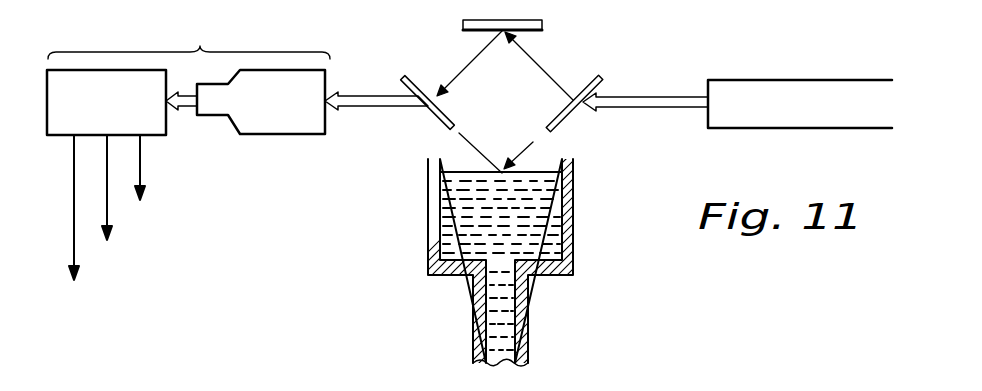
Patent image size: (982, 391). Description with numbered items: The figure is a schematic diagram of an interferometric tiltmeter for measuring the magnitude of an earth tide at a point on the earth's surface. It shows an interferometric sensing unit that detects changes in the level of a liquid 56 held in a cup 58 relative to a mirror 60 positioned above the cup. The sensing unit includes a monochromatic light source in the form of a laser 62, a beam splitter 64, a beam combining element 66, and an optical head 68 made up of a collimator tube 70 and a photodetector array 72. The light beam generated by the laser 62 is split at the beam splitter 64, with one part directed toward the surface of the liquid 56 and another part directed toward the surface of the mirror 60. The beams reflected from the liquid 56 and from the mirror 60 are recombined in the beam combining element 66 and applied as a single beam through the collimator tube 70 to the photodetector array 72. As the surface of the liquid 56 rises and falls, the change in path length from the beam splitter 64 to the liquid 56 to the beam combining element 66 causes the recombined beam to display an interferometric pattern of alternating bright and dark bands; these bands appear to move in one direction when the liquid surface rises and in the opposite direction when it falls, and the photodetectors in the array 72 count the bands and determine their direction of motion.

The liquid 56 is at (531, 207).
The cup 58 is at (571, 273).
The mirror 60 is at (542, 23).
The laser 62 is at (798, 80).
The beam splitter 64 is at (592, 73).
The beam combining element 66 is at (415, 77).
The optical head 68 is at (189, 38).
The collimator tube 70 is at (297, 135).
The photodetector array 72 is at (47, 117).